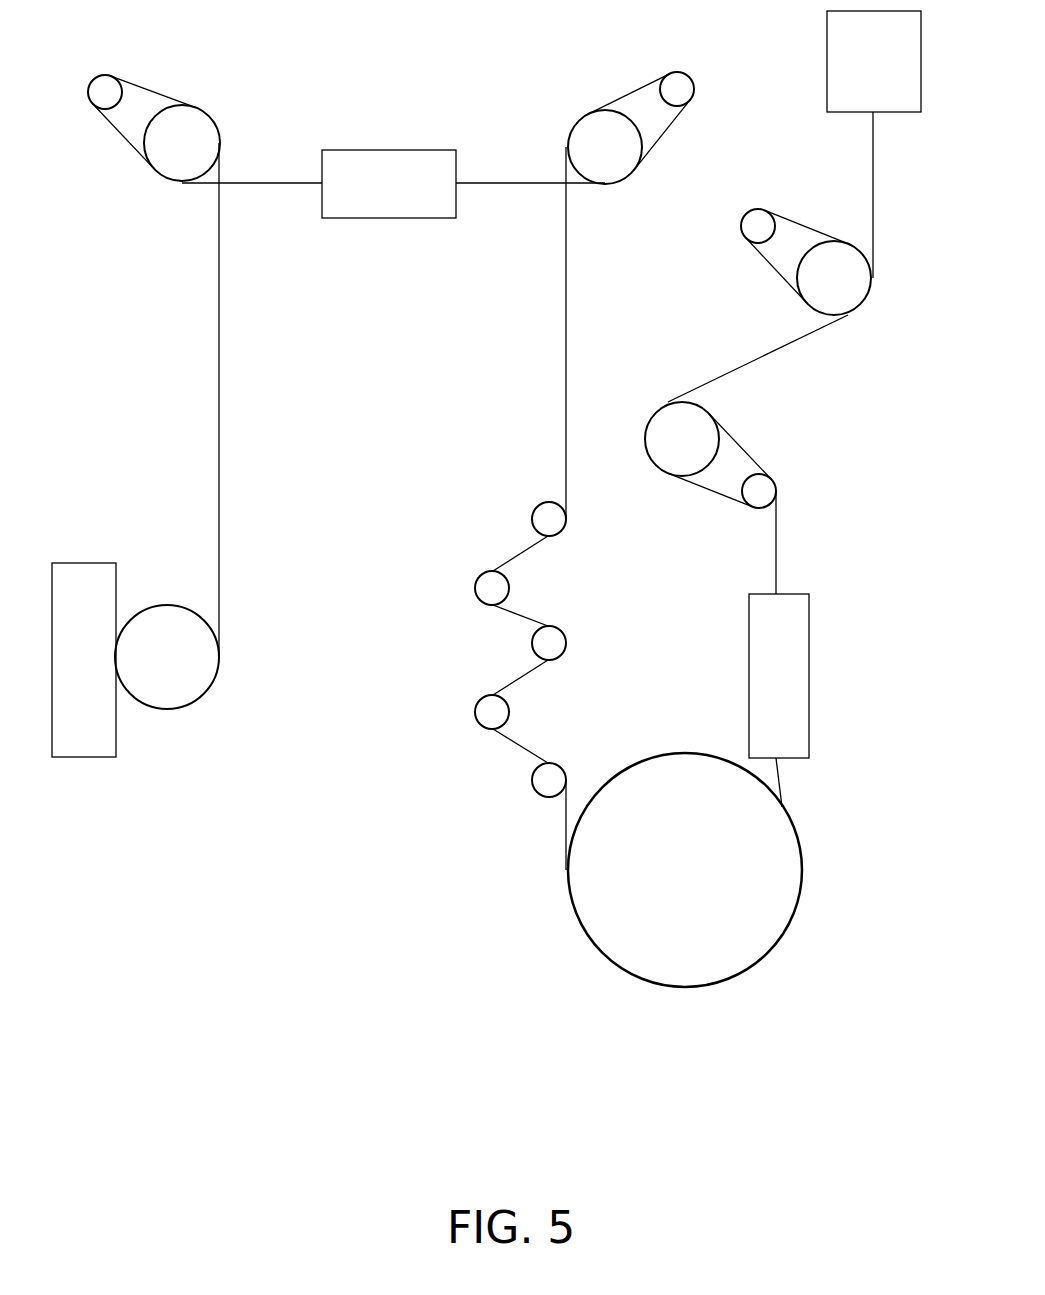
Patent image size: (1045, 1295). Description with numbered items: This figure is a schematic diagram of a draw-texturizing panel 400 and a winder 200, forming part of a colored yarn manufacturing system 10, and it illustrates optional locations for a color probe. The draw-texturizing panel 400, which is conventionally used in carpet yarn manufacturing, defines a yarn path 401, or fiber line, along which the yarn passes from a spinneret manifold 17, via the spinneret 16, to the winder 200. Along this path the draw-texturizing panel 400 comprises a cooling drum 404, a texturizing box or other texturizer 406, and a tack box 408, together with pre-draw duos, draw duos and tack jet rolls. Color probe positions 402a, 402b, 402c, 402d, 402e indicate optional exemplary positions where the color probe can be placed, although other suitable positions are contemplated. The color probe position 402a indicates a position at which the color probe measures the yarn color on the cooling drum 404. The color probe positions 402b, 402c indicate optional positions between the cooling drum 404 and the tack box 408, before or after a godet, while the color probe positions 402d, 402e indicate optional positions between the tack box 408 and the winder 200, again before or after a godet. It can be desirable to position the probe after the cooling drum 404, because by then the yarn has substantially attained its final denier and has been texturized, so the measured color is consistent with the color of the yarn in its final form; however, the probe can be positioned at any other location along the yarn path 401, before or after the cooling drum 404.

The draw-texturizing panel 400 is at (178, 50).
The color probe position 402d is at (270, 183).
The color probe position 402c is at (527, 183).
The color probe position 402b is at (566, 375).
The color probe position 402a is at (582, 930).
The color probe position 402e is at (219, 397).
The yarn path 401 is at (566, 295).
The tack box 408 is at (413, 207).
The texturizer 406 is at (776, 655).
The cooling drum 404 is at (713, 925).
The winder 200 is at (95, 585).
The manufacturing system 10 is at (837, 144).
The spinneret manifold 17 is at (827, 80).
The spinneret 16 is at (874, 113).